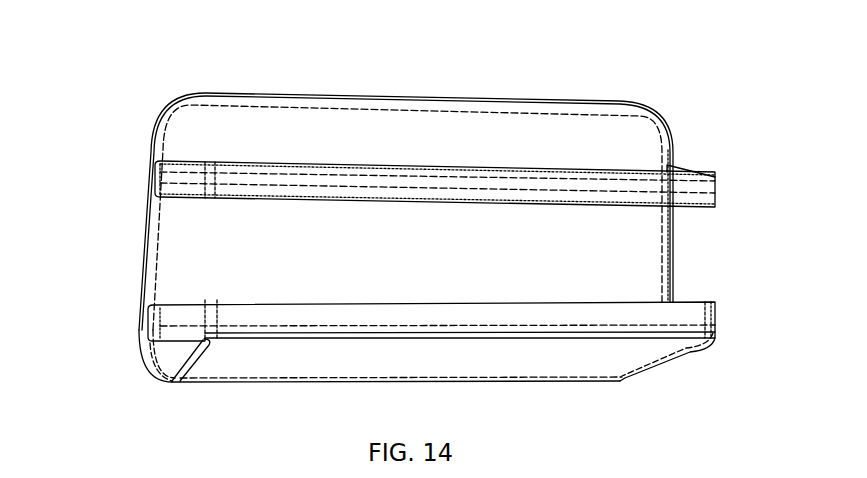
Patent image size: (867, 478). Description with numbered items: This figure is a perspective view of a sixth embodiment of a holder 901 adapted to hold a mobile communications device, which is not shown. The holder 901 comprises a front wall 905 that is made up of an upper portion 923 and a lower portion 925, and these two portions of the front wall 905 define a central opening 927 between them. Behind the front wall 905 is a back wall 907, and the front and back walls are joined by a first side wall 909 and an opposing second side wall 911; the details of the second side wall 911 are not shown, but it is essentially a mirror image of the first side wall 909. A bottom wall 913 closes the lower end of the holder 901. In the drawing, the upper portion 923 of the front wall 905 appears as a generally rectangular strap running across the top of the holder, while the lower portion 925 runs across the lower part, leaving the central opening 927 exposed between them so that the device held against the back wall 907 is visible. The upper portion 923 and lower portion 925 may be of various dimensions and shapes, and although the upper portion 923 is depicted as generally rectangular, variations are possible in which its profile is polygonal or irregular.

The holder 901 is at (119, 41).
The front wall 905 is at (697, 253).
The back wall 907 is at (447, 257).
The first side wall 909 is at (155, 321).
The second side wall 911 is at (718, 318).
The bottom wall 913 is at (447, 367).
The upper portion of front wall 923 is at (555, 170).
The lower portion of front wall 925 is at (583, 300).
The central opening 927 is at (114, 234).